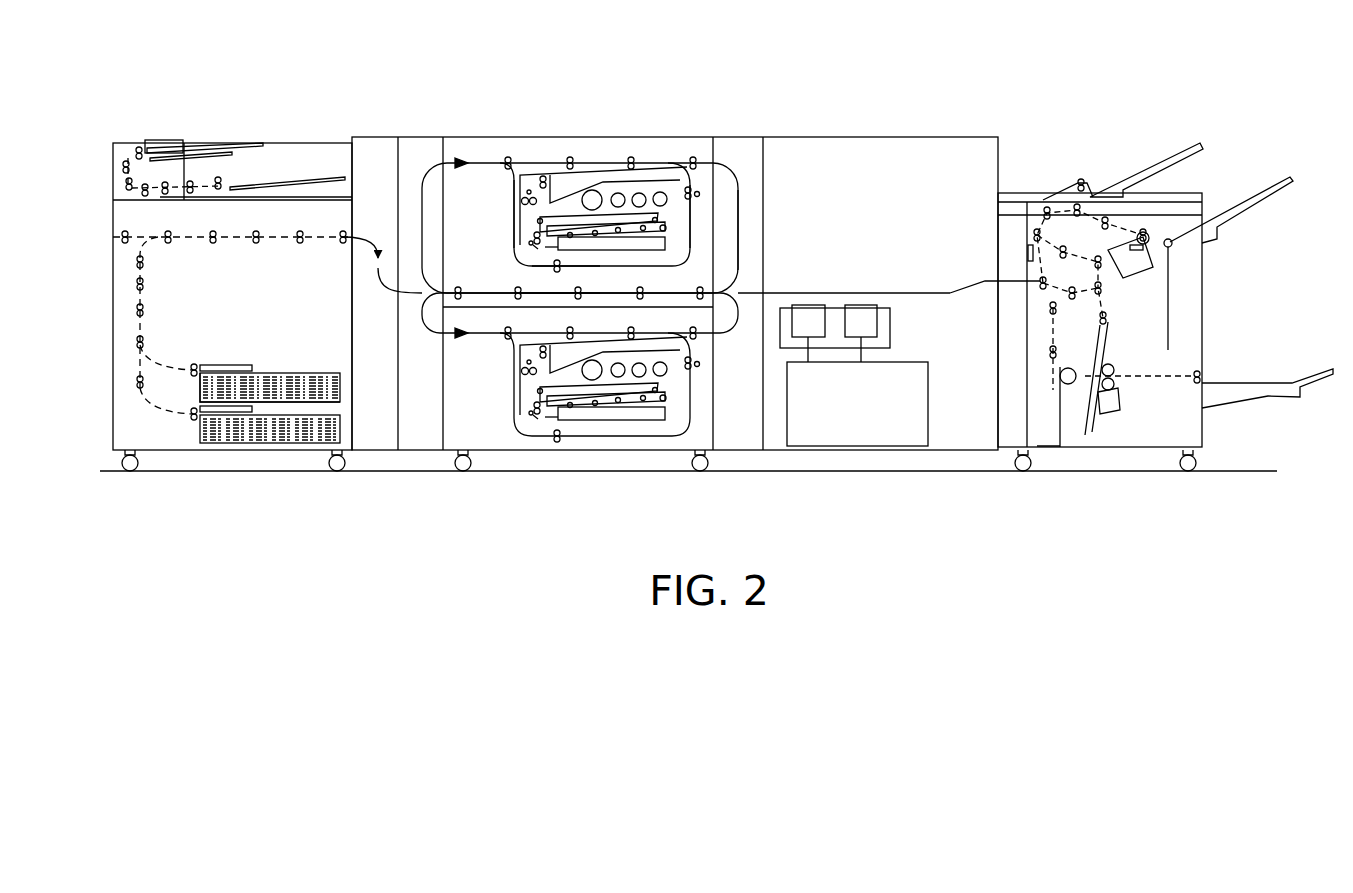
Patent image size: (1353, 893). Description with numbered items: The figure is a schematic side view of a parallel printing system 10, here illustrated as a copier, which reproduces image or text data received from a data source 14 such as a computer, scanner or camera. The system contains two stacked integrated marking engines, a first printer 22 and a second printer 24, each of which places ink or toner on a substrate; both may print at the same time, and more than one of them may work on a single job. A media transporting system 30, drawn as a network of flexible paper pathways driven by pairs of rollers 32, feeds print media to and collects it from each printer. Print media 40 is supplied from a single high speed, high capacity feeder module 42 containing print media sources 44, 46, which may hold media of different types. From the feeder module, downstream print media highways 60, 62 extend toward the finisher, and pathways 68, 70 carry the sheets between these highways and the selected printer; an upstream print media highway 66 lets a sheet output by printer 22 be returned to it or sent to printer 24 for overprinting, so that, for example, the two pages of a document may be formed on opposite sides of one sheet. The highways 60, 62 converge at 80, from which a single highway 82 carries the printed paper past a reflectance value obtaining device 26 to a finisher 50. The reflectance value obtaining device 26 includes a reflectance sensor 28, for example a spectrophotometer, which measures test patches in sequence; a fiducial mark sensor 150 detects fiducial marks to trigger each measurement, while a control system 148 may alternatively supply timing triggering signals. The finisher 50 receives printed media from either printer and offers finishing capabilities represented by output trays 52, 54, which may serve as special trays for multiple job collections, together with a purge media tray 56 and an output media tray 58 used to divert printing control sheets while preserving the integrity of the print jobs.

The parallel printing system 10 is at (187, 100).
The data source 14 is at (110, 165).
The marking engine 22 is at (532, 143).
The marking engine 24 is at (621, 450).
The reflectance value obtaining device 26 is at (871, 345).
The reflectance sensor 28 is at (861, 310).
The media transporting system 30 is at (422, 173).
The pairs of rollers 32 is at (497, 150).
The print media 40 is at (298, 373).
The feeder module 42 is at (120, 310).
The print media source 44 is at (200, 397).
The print media source 46 is at (200, 425).
The finisher 50 is at (1053, 175).
The output tray 52 is at (1243, 198).
The output tray 54 is at (1253, 378).
The purge media tray 56 is at (1050, 447).
The output media tray 58 is at (1168, 158).
The downstream print media highway 60 is at (603, 162).
The downstream print media highway 62 is at (488, 335).
The upstream print media highway 66 is at (530, 293).
The pathway 68 is at (513, 188).
The pathway 70 is at (688, 183).
The convergence point 80 is at (748, 262).
The single highway 82 is at (908, 290).
The control system 148 is at (845, 428).
The fiducial mark sensor 150 is at (812, 310).